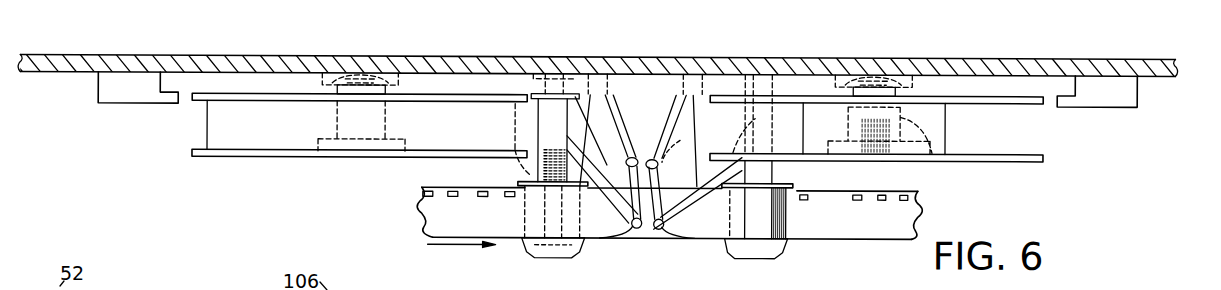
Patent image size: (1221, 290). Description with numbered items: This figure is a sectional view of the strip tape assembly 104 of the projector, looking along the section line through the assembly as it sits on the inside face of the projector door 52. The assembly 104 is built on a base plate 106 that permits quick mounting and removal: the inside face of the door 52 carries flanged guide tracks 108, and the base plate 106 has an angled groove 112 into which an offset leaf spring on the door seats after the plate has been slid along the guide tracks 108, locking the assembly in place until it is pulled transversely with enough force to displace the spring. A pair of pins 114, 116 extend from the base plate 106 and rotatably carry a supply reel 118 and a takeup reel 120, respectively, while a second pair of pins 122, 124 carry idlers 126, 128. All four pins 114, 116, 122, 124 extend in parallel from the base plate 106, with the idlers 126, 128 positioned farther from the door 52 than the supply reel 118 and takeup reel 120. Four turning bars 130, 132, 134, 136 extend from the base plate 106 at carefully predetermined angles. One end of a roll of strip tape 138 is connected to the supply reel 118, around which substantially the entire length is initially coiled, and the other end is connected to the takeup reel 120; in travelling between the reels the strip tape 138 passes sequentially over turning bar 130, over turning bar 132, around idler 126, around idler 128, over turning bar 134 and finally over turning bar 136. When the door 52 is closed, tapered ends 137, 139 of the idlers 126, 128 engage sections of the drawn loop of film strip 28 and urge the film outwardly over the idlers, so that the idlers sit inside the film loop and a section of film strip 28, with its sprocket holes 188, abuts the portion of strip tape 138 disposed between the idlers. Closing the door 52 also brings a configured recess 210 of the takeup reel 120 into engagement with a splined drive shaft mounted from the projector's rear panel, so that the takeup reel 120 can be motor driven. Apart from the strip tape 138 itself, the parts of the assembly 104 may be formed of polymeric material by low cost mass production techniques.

The door 52 is at (72, 56).
The base plate 106 is at (487, 74).
The flanged guide tracks 108 is at (137, 98).
The supply reel 118 is at (233, 159).
The pin 114 is at (318, 141).
The sprocket holes 188 is at (422, 188).
The strip tape assembly 104 is at (852, 170).
The film strip 28 is at (835, 235).
The idler 128 is at (808, 196).
The pin 122 is at (530, 170).
The tapered end 137 is at (535, 253).
The idler 126 is at (590, 240).
The angled groove 112 is at (635, 192).
The turning bar 130 is at (631, 156).
The turning bar 136 is at (650, 158).
The turning bar 132 is at (636, 230).
The turning bar 134 is at (658, 230).
The strip tape 138 is at (710, 238).
The pin 124 is at (773, 176).
The tapered end 139 is at (778, 260).
The pin 116 is at (935, 163).
The takeup reel 120 is at (990, 162).
The recess 210 is at (876, 162).